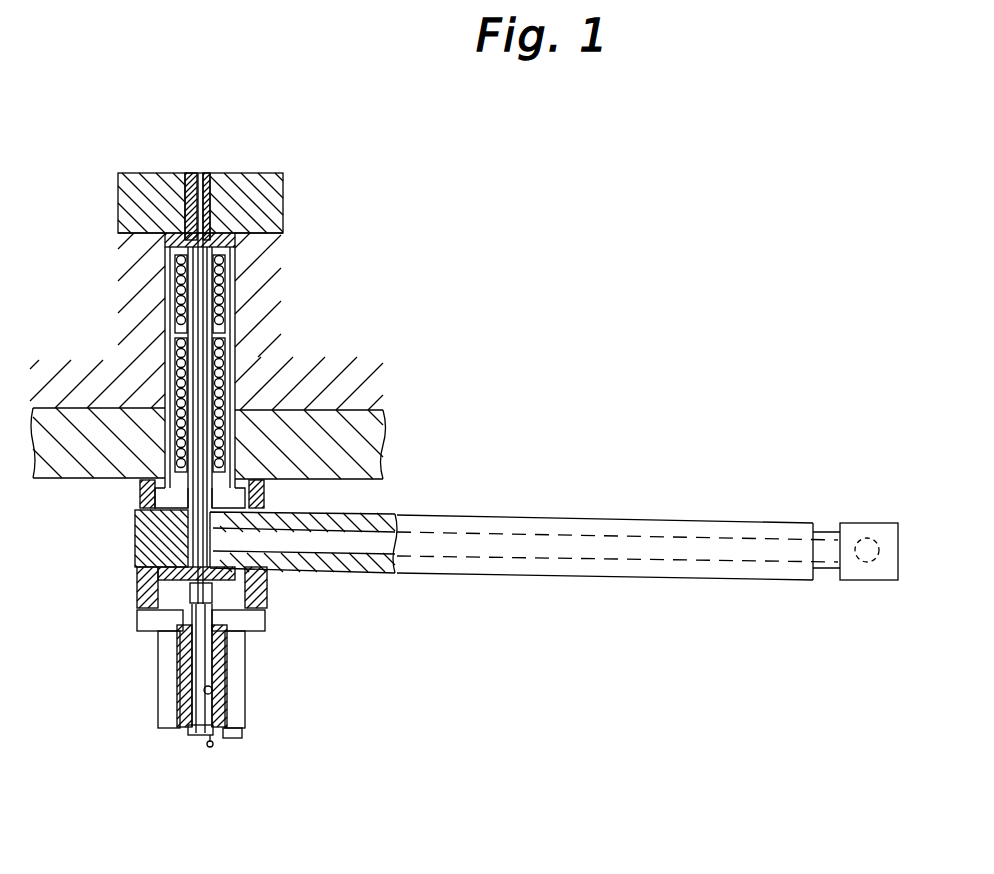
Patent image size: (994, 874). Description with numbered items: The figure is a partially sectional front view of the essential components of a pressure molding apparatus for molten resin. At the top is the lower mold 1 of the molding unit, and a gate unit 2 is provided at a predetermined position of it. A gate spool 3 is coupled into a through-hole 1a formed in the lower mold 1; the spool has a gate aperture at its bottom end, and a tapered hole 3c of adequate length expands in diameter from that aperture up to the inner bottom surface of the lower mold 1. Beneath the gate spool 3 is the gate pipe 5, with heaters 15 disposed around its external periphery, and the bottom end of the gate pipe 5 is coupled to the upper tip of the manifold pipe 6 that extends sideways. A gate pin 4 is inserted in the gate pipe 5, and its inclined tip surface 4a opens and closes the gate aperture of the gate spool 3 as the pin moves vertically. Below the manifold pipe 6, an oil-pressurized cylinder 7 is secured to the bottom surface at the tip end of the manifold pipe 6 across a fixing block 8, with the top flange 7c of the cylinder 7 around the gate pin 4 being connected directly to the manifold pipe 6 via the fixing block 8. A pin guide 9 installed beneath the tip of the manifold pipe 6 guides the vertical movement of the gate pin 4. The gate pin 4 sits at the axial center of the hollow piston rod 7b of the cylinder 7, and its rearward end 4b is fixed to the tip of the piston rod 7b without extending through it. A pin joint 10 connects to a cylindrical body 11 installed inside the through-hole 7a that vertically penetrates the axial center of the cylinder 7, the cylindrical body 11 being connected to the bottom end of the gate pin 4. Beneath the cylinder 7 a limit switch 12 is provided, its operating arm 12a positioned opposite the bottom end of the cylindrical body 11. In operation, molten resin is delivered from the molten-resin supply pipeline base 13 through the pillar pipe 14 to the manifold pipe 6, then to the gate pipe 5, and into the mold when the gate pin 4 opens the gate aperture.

The lower mold 1 is at (263, 173).
The through-hole 1a is at (203, 172).
The gate unit 2 is at (232, 237).
The gate spool 3 is at (148, 172).
The tapered hole 3c is at (195, 172).
The gate pin 4 is at (165, 325).
The inclined tip surface 4a is at (118, 250).
The rearward end 4b is at (136, 568).
The gate pipe 5 is at (235, 335).
The manifold pipe 6 is at (385, 575).
The oil-pressurized cylinder 7 is at (237, 718).
The through-hole 7a is at (212, 690).
The piston rod 7b is at (177, 648).
The top flange 7c is at (250, 618).
The fixing block 8 is at (137, 598).
The pin guide 9 is at (240, 580).
The pin joint 10 is at (258, 637).
The cylindrical body 11 is at (180, 673).
The limit switch 12 is at (235, 738).
The operating arm 12a is at (210, 746).
The molten-resin supply pipeline base 13 is at (862, 580).
The pillar pipe 14 is at (826, 568).
The heater 15 is at (235, 270).